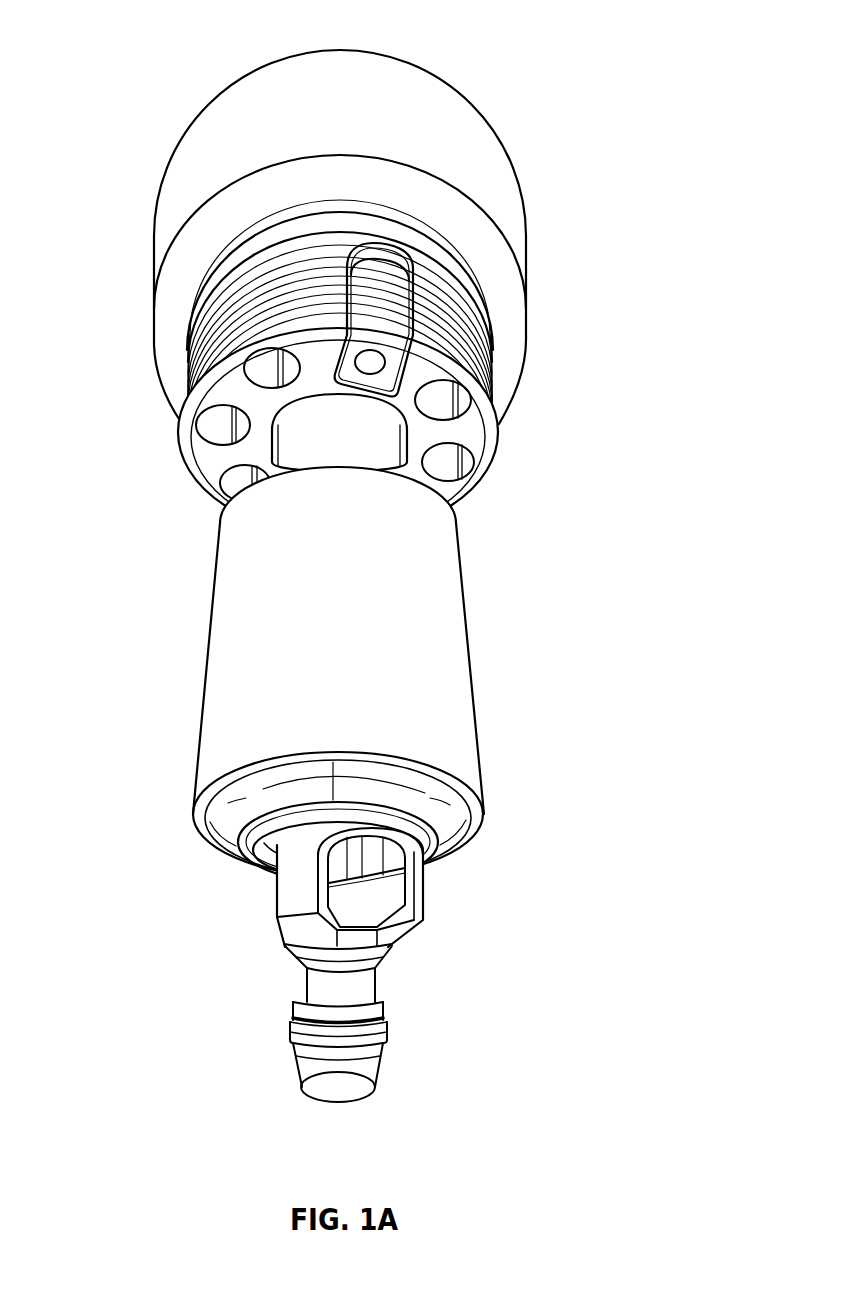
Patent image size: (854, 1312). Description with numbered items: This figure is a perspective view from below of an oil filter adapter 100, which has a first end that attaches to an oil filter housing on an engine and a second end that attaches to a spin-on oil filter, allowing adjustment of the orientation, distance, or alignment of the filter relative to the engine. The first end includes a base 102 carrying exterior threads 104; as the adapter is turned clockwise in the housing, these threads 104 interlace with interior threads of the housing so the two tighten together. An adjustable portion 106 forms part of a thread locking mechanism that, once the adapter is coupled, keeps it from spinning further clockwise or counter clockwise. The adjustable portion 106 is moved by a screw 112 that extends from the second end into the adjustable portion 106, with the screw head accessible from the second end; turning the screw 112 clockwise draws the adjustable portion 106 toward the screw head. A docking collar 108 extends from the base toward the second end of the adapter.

The oil filter adapter 100 is at (582, 63).
The base 102 is at (208, 358).
The threads 104 is at (487, 342).
The adjustable portion 106 is at (373, 313).
The docking collar 108 is at (243, 667).
The screw 112 is at (375, 362).